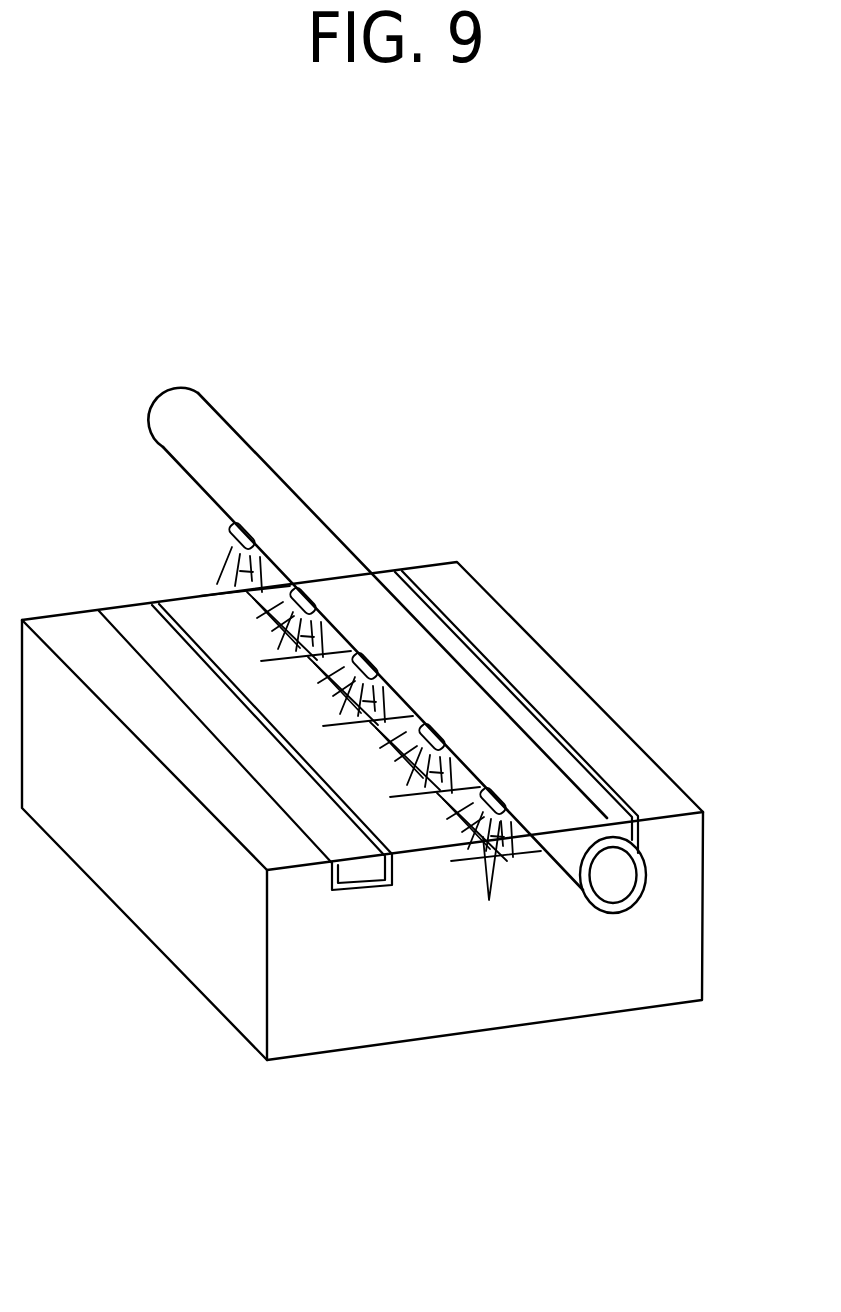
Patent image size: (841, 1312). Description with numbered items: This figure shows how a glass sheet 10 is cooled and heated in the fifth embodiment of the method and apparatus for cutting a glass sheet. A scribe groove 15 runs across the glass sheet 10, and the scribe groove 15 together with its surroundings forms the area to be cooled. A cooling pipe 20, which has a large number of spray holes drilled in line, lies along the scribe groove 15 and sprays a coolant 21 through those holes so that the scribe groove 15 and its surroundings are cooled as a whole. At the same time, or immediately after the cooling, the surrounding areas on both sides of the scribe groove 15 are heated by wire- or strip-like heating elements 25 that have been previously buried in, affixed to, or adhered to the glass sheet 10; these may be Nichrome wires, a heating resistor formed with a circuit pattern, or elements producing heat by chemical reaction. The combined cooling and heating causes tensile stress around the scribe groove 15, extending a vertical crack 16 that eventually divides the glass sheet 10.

The glass sheet 10 is at (125, 878).
The scribe groove 15 is at (393, 743).
The vertical crack 16 is at (497, 880).
The cooling pipe 20 is at (252, 465).
The coolant 21 is at (270, 567).
The heating element 25 is at (608, 812).